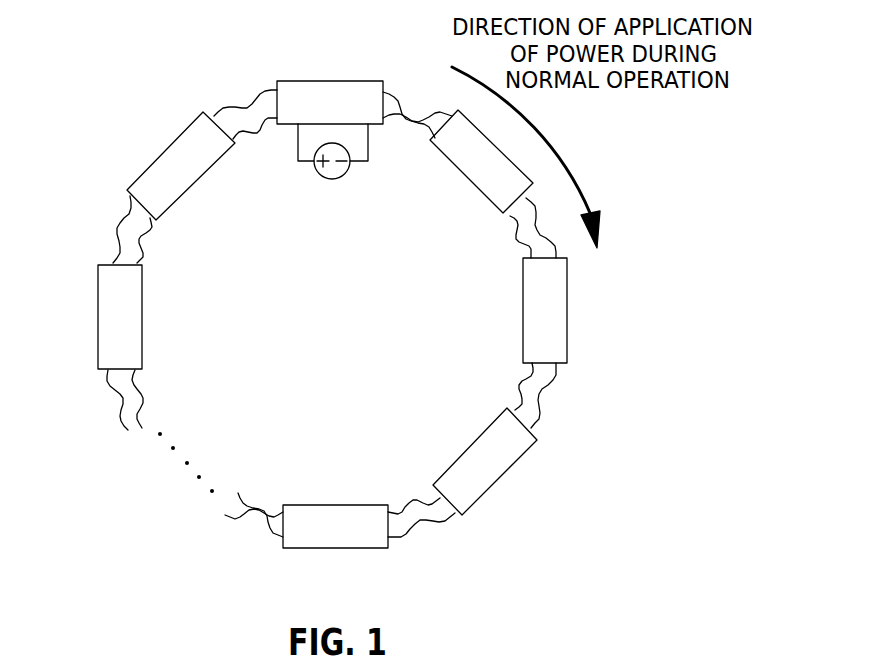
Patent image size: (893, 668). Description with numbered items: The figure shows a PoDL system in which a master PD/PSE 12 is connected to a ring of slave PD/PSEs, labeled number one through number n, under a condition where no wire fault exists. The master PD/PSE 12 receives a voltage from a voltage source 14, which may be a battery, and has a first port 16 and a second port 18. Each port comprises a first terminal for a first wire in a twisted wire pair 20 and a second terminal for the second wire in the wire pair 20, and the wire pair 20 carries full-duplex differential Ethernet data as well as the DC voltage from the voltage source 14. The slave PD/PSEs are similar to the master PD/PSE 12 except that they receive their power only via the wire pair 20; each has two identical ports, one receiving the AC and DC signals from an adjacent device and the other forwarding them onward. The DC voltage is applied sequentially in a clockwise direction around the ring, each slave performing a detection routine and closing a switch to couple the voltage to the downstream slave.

The master PD/PSE 12 is at (384, 122).
The voltage source 14 is at (314, 166).
The first port 16 is at (277, 86).
The second port 18 is at (384, 83).
The twisted wire pair 20 is at (209, 95).